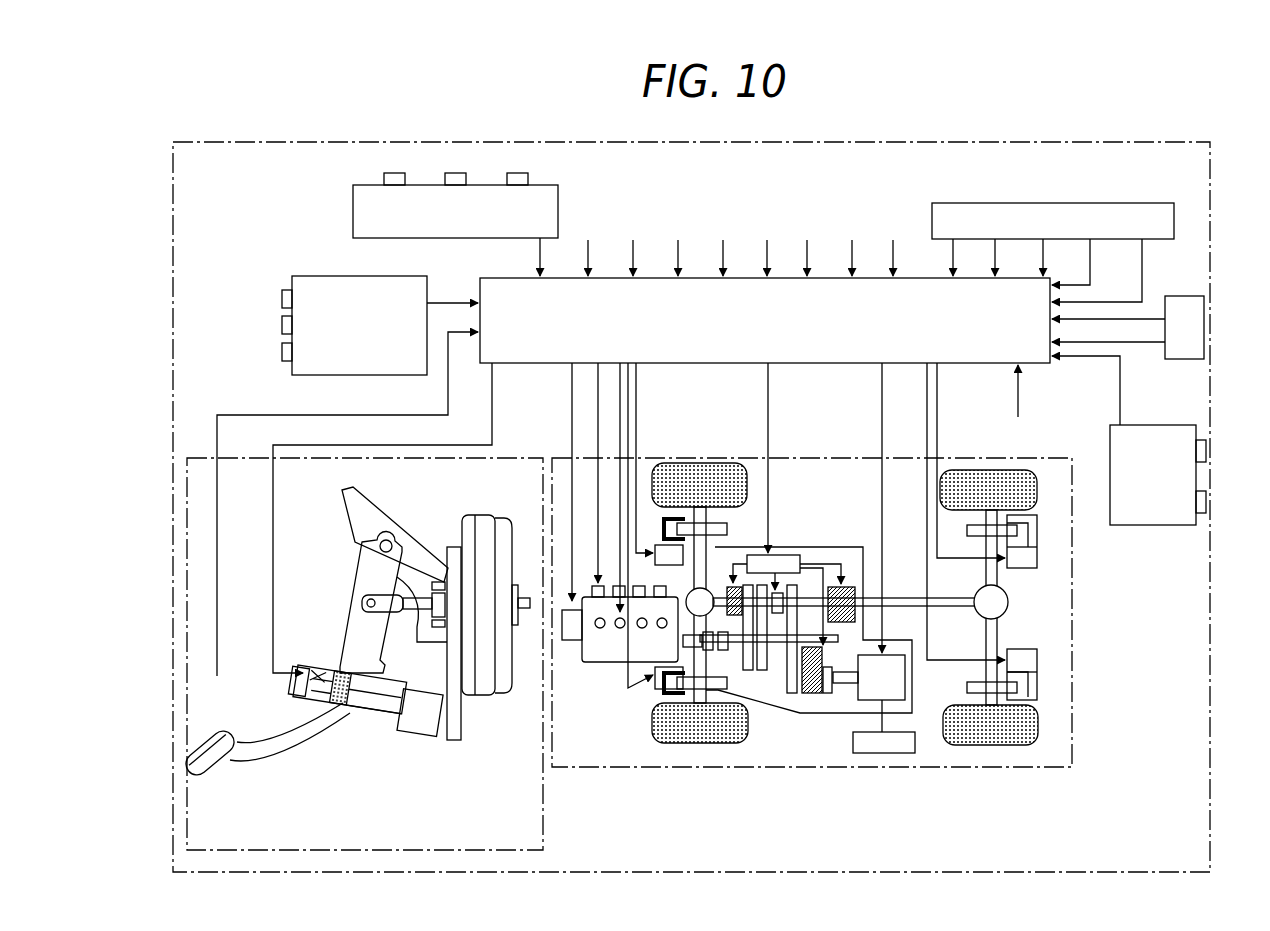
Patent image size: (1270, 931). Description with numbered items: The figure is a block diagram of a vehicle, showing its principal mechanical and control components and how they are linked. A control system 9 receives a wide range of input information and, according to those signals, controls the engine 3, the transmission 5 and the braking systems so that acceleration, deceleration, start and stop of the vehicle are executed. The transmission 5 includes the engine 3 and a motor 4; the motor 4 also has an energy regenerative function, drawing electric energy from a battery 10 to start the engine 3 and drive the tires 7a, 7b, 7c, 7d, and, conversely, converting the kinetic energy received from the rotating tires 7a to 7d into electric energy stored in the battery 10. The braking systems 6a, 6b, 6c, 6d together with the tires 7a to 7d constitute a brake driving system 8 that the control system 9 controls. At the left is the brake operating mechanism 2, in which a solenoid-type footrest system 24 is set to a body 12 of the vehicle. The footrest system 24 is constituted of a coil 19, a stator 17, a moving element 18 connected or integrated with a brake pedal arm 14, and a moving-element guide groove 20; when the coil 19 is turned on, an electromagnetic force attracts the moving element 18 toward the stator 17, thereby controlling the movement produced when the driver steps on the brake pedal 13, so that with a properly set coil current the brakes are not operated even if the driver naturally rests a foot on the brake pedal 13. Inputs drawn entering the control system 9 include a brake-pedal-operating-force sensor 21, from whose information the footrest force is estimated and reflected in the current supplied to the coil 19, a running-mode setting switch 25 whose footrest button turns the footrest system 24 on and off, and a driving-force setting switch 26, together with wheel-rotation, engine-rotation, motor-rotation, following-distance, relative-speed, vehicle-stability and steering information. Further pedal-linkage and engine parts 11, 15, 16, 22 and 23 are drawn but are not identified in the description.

The brake operating mechanism 2 is at (440, 851).
The engine 3 is at (617, 657).
The motor 4 is at (893, 690).
The transmission 5 is at (800, 715).
The braking system 6a is at (658, 546).
The braking system 6b is at (656, 692).
The braking system 6c is at (1035, 532).
The braking system 6d is at (1037, 690).
The tire 7a is at (707, 468).
The tire 7b is at (725, 745).
The tire 7c is at (963, 480).
The tire 7d is at (1005, 748).
The brake driving system 8 is at (945, 767).
The control system 9 is at (805, 353).
The battery 10 is at (880, 760).
The pedal arm 11 is at (347, 506).
The body 12 is at (445, 550).
The brake pedal 13 is at (213, 782).
The brake pedal arm 14 is at (283, 735).
The link lever 15 is at (425, 597).
The brake booster 16 is at (505, 561).
The stator 17 is at (331, 667).
The moving element 18 is at (348, 708).
The coil 19 is at (340, 705).
The moving-element guide groove 20 is at (377, 676).
The brake-pedal-operating-force sensor 21 is at (212, 732).
The engine sensor 22 is at (572, 642).
The throttle actuator 23 is at (598, 580).
The solenoid-type footrest system 24 is at (428, 725).
The running-mode setting switch 25 is at (300, 276).
The driving-force (acceleration) setting switch 26 is at (420, 185).